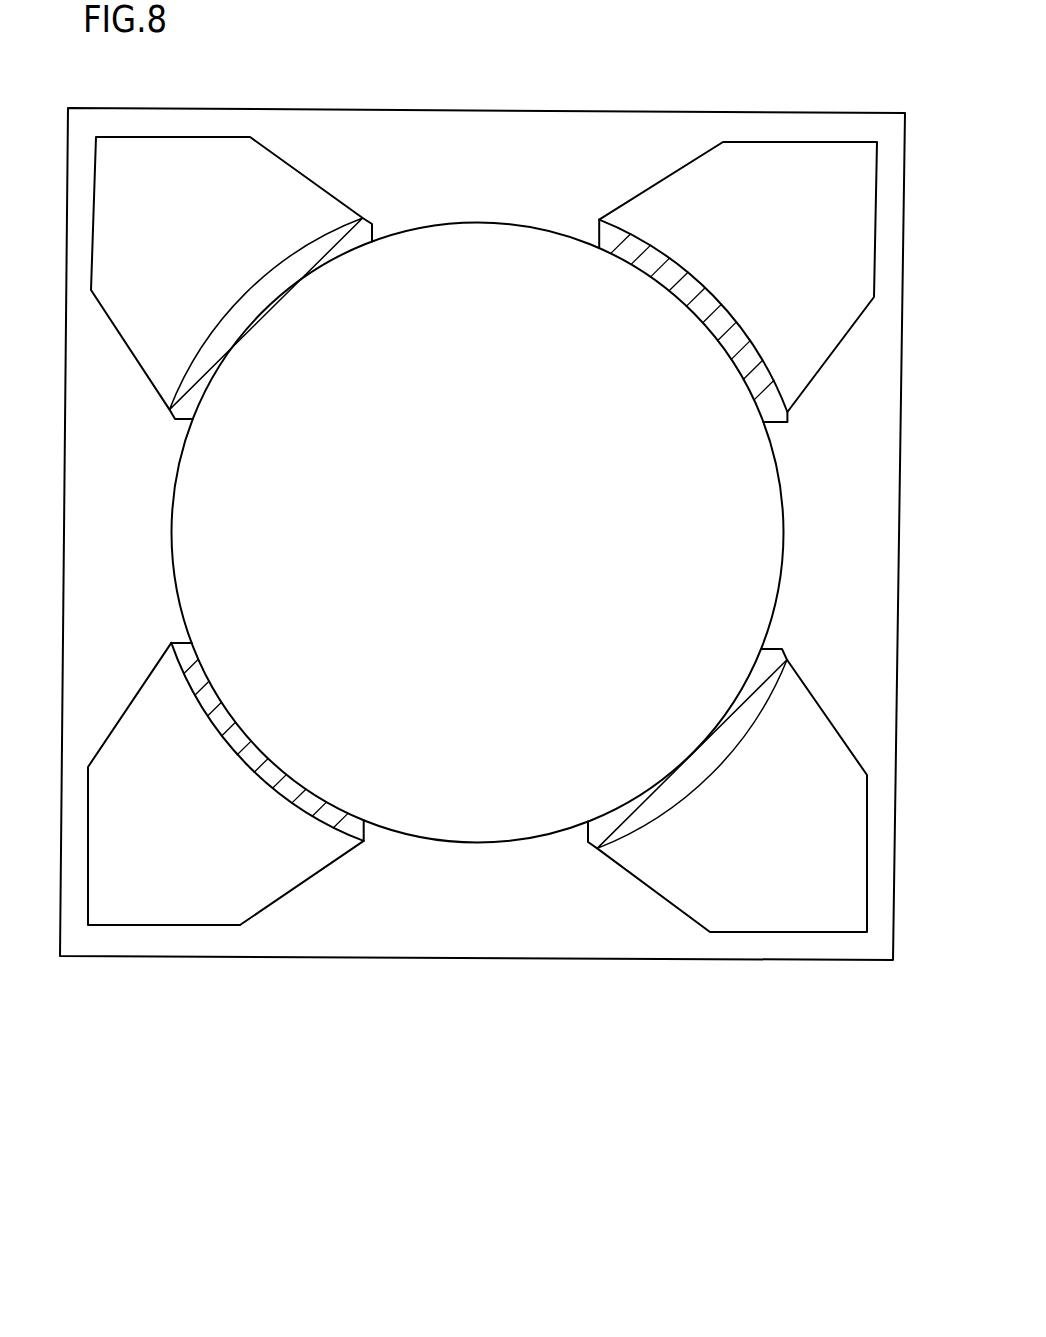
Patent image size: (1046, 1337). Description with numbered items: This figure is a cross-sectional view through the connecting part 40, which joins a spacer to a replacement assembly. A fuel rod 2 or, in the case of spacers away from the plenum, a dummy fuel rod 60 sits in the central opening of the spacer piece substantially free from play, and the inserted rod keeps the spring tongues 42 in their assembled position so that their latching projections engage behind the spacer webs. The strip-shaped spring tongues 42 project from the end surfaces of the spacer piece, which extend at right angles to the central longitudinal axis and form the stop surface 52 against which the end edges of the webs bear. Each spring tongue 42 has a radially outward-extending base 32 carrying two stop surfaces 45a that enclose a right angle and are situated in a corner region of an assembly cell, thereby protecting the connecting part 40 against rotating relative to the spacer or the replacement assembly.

The fuel rod 2 is at (478, 676).
The dummy fuel rod 60 is at (482, 841).
The base 32 is at (748, 212).
The connecting part 40 is at (430, 990).
The spring tongue 42 is at (202, 921).
The stop surface 45a is at (88, 852).
The stop surface 52 is at (655, 137).